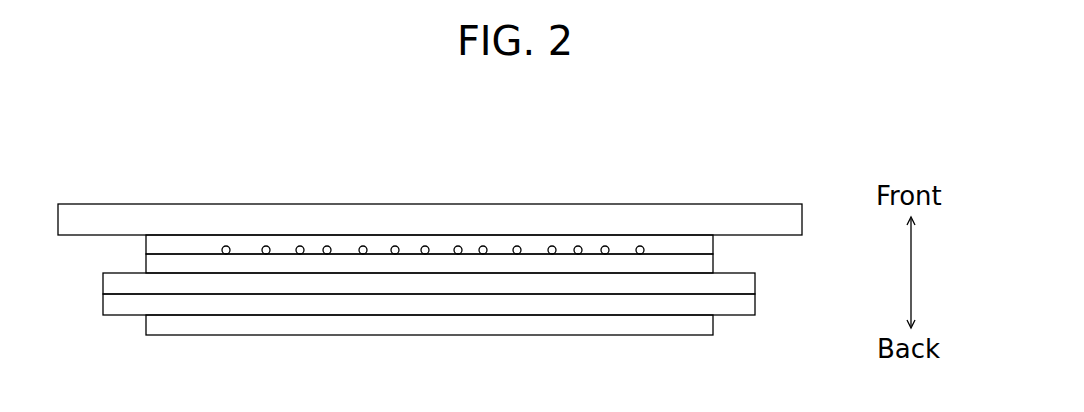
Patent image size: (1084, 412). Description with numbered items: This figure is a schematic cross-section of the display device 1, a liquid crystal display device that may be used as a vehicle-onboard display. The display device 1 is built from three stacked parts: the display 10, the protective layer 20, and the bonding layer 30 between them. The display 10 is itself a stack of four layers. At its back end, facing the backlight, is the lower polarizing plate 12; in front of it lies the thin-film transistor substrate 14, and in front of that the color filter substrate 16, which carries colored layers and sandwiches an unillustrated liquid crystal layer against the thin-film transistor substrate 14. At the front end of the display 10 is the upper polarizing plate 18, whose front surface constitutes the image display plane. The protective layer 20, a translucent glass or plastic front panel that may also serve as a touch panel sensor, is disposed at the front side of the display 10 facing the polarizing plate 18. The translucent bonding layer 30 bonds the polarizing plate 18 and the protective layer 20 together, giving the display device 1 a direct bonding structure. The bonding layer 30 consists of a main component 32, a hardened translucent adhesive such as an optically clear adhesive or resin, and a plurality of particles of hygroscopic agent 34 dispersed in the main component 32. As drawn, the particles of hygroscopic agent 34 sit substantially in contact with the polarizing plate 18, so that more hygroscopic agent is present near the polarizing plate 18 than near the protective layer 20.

The display device 1 is at (811, 157).
The display 10 is at (813, 242).
The polarizing plate 12 is at (716, 325).
The thin-film transistor substrate 14 is at (757, 305).
The color filter substrate 16 is at (757, 283).
The polarizing plate 18 is at (716, 262).
The protective layer 20 is at (101, 204).
The bonding layer 30 is at (143, 243).
The main component 32 is at (187, 245).
The hygroscopic agent 34 is at (395, 246).